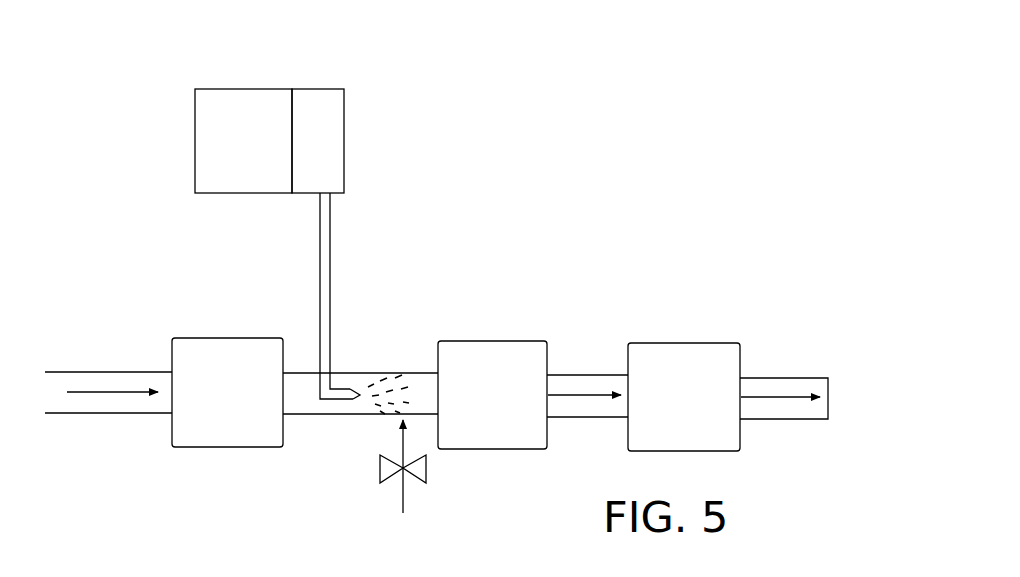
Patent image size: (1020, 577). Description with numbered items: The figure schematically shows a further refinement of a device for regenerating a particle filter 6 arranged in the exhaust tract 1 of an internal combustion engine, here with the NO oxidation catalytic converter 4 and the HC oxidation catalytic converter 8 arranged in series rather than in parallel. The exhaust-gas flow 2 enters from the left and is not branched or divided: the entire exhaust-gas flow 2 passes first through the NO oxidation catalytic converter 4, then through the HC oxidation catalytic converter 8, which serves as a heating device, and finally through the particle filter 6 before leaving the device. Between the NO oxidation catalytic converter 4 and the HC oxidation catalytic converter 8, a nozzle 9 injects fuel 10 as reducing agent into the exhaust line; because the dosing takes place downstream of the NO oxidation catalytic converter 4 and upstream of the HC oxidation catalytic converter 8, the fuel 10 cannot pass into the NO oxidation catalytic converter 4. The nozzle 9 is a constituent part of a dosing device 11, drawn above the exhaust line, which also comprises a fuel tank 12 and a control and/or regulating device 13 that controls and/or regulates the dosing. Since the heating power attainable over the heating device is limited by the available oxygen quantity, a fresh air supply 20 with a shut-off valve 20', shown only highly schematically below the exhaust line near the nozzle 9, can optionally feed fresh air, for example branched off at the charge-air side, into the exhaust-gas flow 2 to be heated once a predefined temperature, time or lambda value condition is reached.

The exhaust tract 1 is at (529, 151).
The exhaust-gas flow 2 is at (90, 392).
The NO oxidation catalytic converter 4 is at (253, 437).
The particle filter 6 is at (694, 353).
The HC oxidation catalytic converter 8 is at (493, 370).
The nozzle 9 is at (342, 388).
The fuel 10 is at (358, 402).
The dosing device 11 is at (336, 66).
The fuel tank 12 is at (237, 103).
The control and/or regulating device 13 is at (327, 153).
The fresh air supply 20 is at (403, 479).
The shut-off valve 20' is at (447, 509).